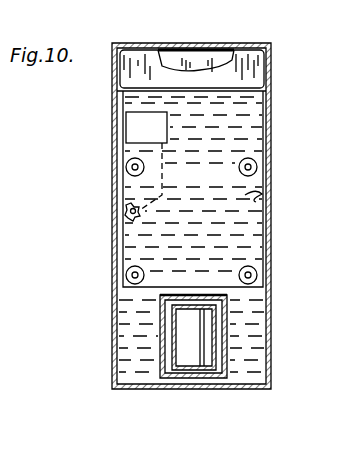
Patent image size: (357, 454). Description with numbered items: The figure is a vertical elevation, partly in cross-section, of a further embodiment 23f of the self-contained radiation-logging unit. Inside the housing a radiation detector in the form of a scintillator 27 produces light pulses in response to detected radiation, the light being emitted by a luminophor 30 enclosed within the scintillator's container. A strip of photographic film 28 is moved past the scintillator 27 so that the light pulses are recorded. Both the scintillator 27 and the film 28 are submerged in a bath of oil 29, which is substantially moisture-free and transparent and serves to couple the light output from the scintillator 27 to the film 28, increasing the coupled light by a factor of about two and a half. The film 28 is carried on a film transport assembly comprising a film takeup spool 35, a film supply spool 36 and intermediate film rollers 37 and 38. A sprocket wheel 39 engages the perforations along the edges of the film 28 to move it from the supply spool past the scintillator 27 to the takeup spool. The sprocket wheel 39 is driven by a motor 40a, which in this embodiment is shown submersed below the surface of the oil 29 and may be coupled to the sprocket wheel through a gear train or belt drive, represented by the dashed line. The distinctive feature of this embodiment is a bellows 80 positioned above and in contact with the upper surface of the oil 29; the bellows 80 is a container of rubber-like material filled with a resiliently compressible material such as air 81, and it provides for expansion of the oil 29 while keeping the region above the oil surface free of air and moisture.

The self-contained unit embodiment 23f is at (276, 232).
The scintillator 27 is at (228, 324).
The photographic film 28 is at (262, 194).
The oil bath 29 is at (228, 121).
The luminophor 30 is at (204, 355).
The film takeup spool 35 is at (127, 161).
The film supply spool 36 is at (258, 160).
The intermediate film roller 37 is at (127, 268).
The intermediate film roller 38 is at (258, 277).
The sprocket wheel 39 is at (129, 209).
The motor 40a is at (130, 127).
The bellows 80 is at (262, 70).
The air 81 is at (192, 58).